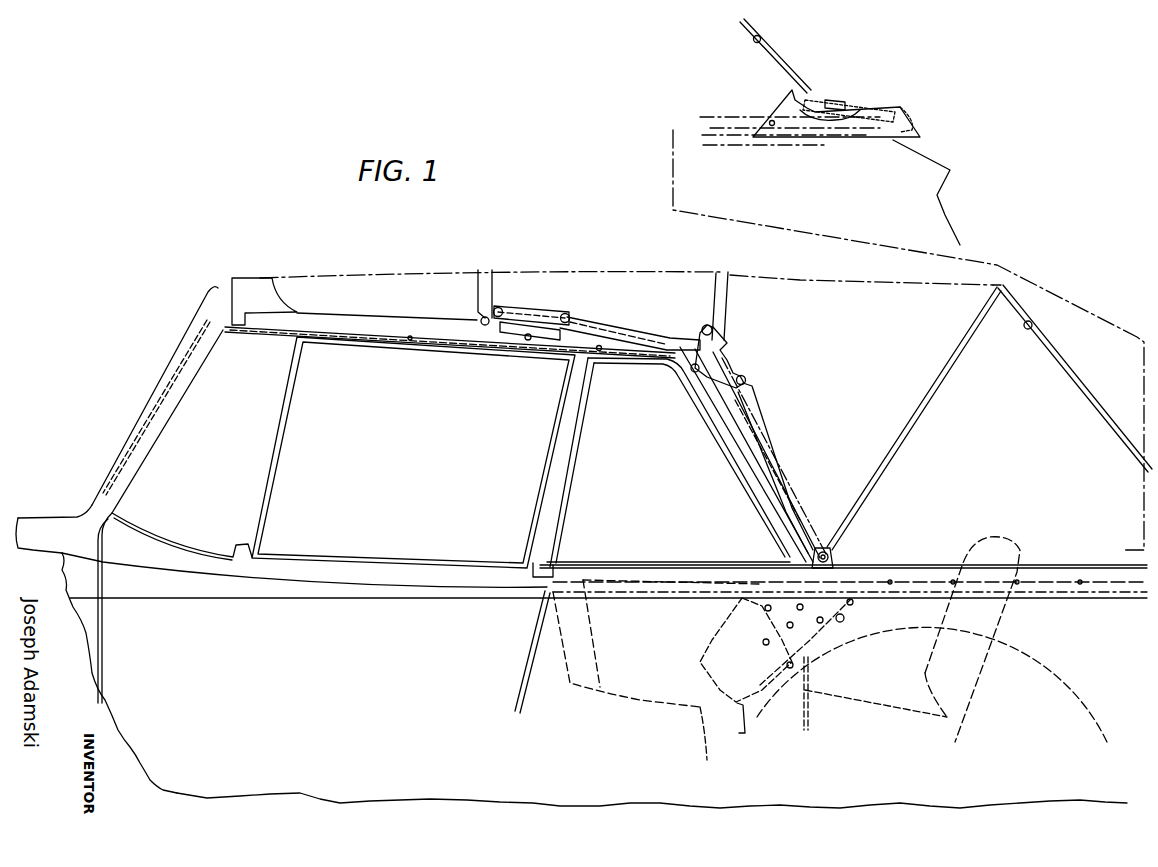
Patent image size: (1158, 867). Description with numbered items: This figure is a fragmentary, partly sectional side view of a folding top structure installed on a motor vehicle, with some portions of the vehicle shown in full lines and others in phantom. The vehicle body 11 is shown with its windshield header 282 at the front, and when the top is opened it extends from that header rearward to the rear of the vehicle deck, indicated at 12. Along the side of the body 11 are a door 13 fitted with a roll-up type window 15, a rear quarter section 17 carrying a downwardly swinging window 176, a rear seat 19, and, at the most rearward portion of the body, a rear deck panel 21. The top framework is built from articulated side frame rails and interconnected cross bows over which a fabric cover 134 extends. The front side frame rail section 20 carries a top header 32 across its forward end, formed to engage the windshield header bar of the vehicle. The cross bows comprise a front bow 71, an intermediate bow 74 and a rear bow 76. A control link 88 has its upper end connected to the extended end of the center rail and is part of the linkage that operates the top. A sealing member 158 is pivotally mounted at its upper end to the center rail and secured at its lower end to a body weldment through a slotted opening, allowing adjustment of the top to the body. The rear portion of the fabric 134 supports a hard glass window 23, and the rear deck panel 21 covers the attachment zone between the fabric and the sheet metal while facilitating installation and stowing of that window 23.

The vehicle body 11 is at (62, 508).
The rear of the vehicle deck 12 is at (909, 102).
The door 13 is at (455, 678).
The roll-up type window 15 is at (393, 484).
The rear quarter section 17 is at (675, 760).
The rear seat 19 is at (887, 713).
The front side frame rail section 20 is at (372, 325).
The rear deck panel 21 is at (860, 97).
The hard glass window 23 is at (1103, 413).
The top header 32 is at (256, 290).
The front bow 71 is at (493, 292).
The intermediate bow 74 is at (728, 303).
The rear bow 76 is at (907, 422).
The control link 88 is at (758, 397).
The fabric cover 134 is at (375, 288).
The sealing member 158 is at (748, 480).
The downwardly swinging window 176 is at (655, 498).
The windshield header 282 is at (222, 290).